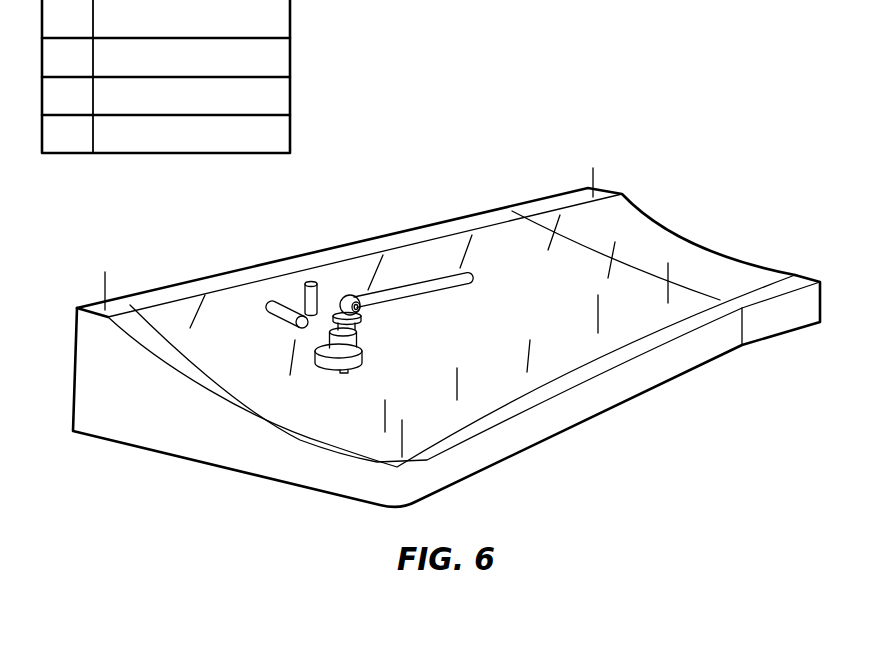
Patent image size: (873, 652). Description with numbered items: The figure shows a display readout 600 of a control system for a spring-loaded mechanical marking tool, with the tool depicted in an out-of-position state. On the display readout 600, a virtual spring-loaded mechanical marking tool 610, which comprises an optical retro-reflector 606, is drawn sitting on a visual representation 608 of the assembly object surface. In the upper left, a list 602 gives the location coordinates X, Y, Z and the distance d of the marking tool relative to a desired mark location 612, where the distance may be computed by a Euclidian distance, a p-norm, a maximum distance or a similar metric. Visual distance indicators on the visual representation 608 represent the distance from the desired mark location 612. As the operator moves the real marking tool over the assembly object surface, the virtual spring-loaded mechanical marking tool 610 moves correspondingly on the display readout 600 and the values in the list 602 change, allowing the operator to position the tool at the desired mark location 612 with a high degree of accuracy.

The display readout 600 is at (594, 44).
The list 602 is at (292, 50).
The optical retro-reflector 606 is at (353, 295).
The visual representation of the assembly object surface 608 is at (508, 293).
The virtual spring-loaded mechanical marking tool 610 is at (365, 345).
The desired mark location 612 is at (296, 338).